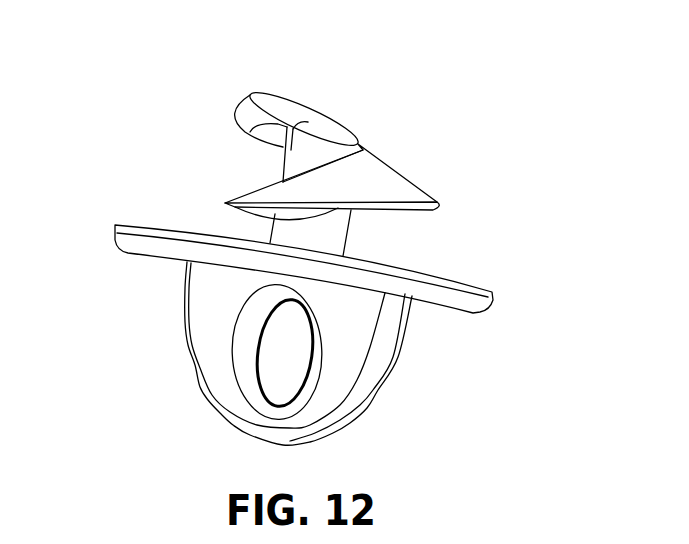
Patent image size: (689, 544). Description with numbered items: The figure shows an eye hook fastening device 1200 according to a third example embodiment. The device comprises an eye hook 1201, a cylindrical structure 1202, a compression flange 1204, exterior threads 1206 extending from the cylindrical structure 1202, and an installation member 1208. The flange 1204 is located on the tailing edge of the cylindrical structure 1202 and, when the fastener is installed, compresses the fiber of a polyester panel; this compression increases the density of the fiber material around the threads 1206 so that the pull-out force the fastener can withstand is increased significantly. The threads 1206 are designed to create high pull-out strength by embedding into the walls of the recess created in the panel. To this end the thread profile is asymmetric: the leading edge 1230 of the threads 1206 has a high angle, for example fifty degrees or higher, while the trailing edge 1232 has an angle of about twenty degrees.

The eye hook fastening device 1200 is at (76, 82).
The eye hook 1201 is at (278, 352).
The cylindrical structure 1202 is at (333, 230).
The compression flange 1204 is at (483, 303).
The exterior threads 1206 is at (398, 189).
The installation member 1208 is at (350, 350).
The leading edge 1230 is at (245, 104).
The trailing edge 1232 is at (228, 202).